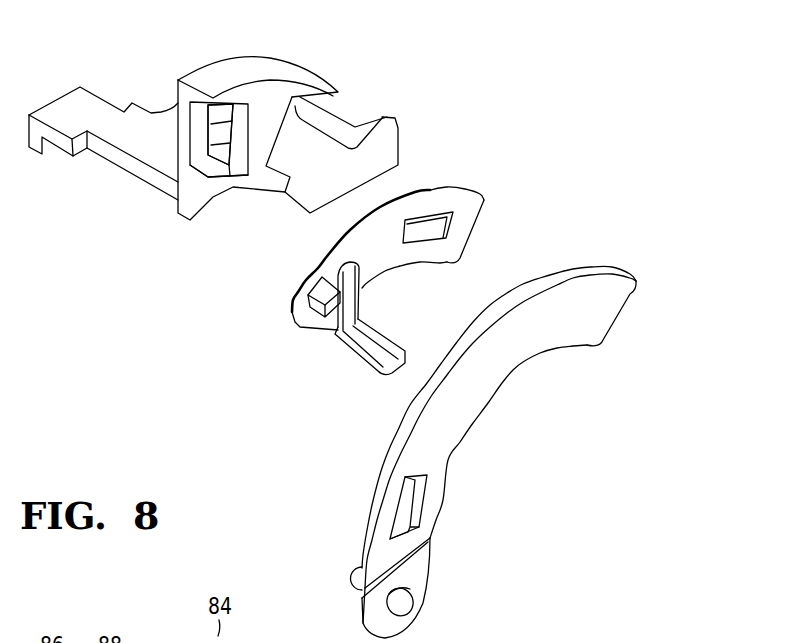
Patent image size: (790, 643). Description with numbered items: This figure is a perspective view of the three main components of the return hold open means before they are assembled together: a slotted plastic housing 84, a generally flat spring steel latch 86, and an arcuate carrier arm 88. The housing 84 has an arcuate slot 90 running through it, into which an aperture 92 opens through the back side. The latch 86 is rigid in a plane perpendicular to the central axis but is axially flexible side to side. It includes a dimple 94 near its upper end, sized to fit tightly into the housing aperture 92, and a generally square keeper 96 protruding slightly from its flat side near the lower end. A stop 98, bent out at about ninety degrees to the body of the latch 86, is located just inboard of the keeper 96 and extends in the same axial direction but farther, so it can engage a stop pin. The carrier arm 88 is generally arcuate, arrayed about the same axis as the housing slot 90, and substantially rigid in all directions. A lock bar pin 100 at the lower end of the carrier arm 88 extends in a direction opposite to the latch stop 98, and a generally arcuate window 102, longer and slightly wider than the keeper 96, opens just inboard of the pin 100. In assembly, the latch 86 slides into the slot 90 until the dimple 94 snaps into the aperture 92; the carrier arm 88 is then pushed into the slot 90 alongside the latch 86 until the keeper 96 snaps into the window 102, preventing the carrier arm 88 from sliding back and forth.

The housing 84 is at (270, 62).
The latch 86 is at (397, 238).
The carrier arm 88 is at (484, 419).
The arcuate slot 90 is at (207, 172).
The aperture 92 is at (210, 126).
The dimple 94 is at (437, 226).
The keeper 96 is at (322, 303).
The stop 98 is at (377, 331).
The lock bar pin 100 is at (349, 573).
The window 102 is at (417, 496).